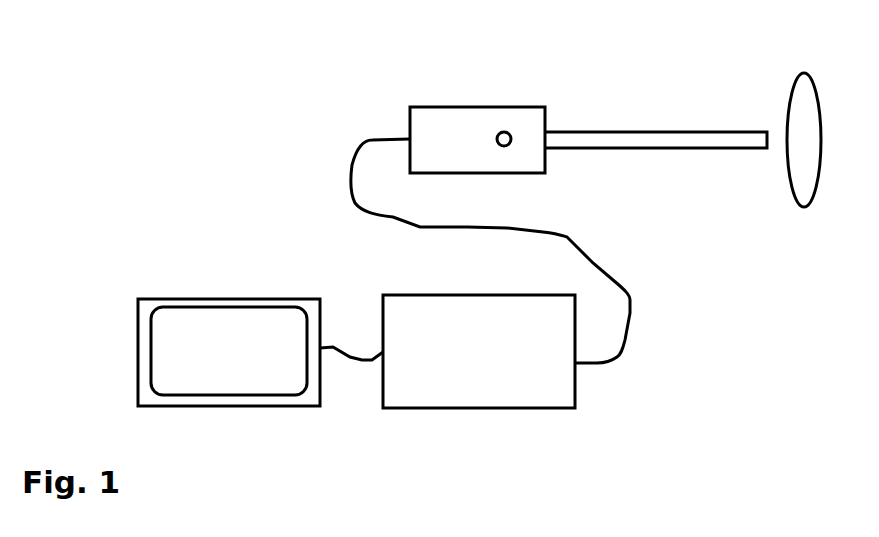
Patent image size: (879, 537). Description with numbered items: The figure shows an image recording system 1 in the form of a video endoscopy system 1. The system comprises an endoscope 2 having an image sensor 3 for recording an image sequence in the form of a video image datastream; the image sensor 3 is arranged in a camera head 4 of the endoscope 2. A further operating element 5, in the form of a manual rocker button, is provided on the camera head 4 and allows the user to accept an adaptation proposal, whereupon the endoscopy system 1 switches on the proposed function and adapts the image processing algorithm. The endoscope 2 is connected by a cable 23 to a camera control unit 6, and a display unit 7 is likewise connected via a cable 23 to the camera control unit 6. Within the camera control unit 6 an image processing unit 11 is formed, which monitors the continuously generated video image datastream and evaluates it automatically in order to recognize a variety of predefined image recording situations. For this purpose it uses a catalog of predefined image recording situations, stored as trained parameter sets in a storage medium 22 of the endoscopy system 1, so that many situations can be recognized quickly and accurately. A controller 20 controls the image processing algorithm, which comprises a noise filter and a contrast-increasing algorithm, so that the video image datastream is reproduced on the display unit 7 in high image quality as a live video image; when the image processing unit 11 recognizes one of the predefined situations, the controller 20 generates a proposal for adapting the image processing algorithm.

The image recording system 1 is at (272, 171).
The endoscope 2 is at (397, 172).
The image sensor 3 is at (532, 138).
The camera head 4 is at (446, 135).
The operating element 5 is at (508, 132).
The camera control unit 6 is at (563, 393).
The display unit 7 is at (163, 298).
The image processing unit 11 is at (475, 332).
The controller 20 is at (450, 328).
The storage medium 22 is at (540, 343).
The cable 23 is at (352, 167).